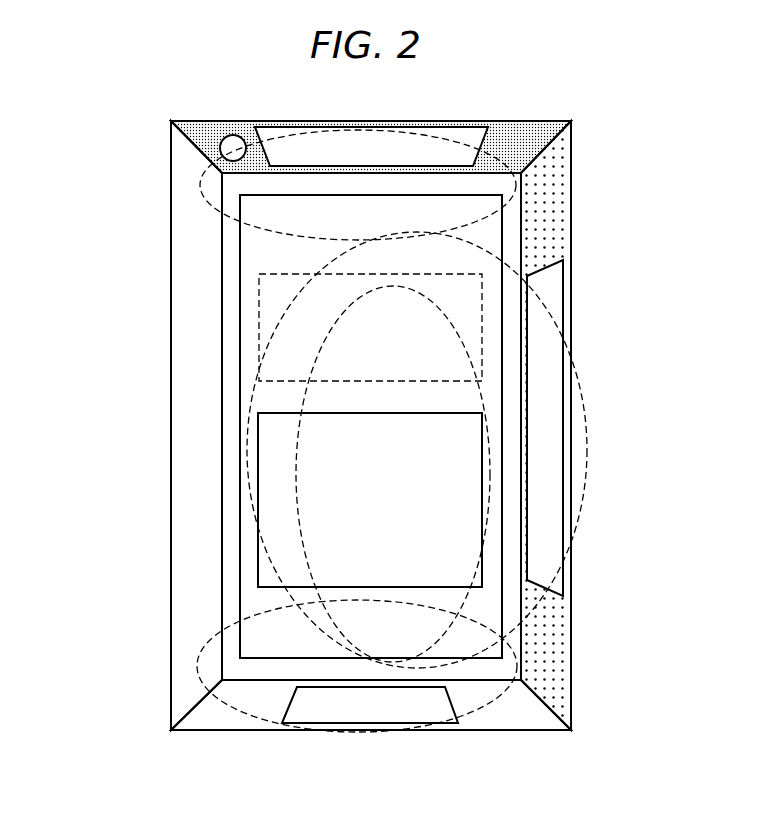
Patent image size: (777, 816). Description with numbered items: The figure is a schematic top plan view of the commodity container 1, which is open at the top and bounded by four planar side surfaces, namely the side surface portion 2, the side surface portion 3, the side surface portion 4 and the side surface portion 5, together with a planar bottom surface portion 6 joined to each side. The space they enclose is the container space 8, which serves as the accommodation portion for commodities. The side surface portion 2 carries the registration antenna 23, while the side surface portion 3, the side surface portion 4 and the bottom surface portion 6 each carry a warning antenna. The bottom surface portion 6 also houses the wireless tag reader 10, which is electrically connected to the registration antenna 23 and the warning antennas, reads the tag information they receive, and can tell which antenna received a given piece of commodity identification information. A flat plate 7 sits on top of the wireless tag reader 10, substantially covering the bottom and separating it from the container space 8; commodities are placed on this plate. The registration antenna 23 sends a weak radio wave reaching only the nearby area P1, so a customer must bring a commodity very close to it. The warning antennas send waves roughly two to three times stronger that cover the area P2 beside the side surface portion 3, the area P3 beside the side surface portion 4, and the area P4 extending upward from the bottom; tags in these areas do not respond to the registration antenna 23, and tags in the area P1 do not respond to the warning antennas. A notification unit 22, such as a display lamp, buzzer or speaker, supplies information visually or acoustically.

The commodity container 1 is at (633, 283).
The side surface portion 2 is at (519, 135).
The side surface portion 3 is at (553, 667).
The side surface portion 4 is at (217, 717).
The side surface portion 5 is at (188, 663).
The bottom surface portion 6 is at (237, 183).
The flat plate 7 is at (490, 227).
The container space 8 is at (492, 391).
The wireless tag reader 10 is at (463, 297).
The notification unit 22 is at (230, 142).
The registration antenna 23 is at (277, 134).
The area P1 is at (447, 135).
The area P2 is at (578, 530).
The area P3 is at (495, 708).
The area P4 is at (502, 463).